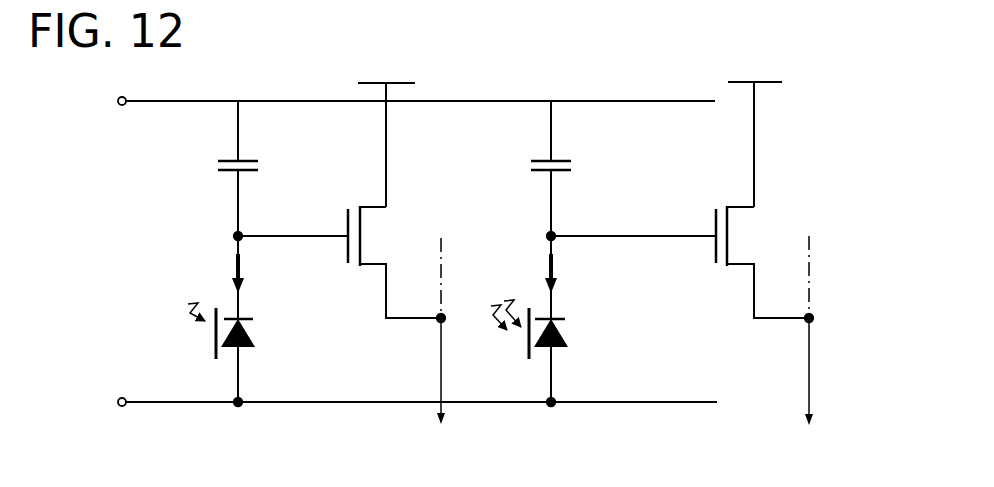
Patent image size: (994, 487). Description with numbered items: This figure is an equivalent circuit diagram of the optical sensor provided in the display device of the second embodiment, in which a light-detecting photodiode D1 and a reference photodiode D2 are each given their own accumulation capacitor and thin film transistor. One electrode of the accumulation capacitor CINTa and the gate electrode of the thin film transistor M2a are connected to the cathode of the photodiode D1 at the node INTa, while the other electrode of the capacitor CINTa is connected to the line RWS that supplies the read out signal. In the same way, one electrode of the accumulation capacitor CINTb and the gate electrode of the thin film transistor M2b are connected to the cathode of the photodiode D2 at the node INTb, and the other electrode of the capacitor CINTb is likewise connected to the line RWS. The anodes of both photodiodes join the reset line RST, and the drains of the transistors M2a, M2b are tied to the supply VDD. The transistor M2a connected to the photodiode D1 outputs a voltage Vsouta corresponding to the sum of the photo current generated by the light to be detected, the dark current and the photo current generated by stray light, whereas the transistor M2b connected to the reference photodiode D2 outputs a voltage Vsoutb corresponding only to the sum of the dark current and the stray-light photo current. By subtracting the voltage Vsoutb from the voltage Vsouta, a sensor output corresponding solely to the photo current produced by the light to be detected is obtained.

The line supplying a read out signal RWS is at (394, 101).
The reset line RST is at (397, 402).
The power supply VDD is at (570, 129).
The accumulation capacitor CINTb is at (257, 168).
The accumulation capacitor CINTa is at (571, 168).
The integration node b INTb is at (235, 235).
The integration node a INTa is at (548, 235).
The thin film transistor M2b is at (394, 262).
The thin film transistor M2a is at (762, 262).
The photodiode for reference D2 is at (233, 355).
The photodiode for detecting light D1 is at (540, 353).
The voltage Vsoutb is at (441, 347).
The voltage Vsouta is at (808, 346).